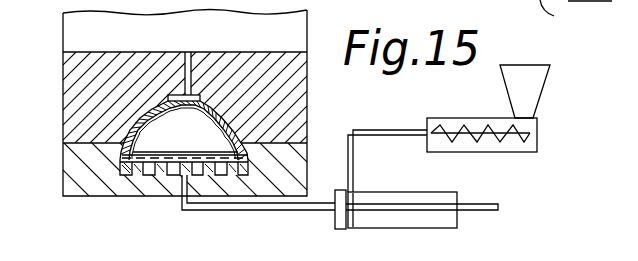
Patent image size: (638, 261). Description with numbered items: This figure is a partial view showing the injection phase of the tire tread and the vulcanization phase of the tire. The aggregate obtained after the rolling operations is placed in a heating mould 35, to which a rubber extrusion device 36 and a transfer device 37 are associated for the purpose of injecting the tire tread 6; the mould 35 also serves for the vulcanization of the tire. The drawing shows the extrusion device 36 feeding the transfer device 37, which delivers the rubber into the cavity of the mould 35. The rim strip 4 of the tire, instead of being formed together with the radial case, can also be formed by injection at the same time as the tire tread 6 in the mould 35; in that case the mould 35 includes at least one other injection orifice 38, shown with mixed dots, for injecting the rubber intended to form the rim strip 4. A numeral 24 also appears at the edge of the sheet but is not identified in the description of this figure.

The heating mould 35 is at (62, 106).
The injection orifice 38 is at (196, 73).
The rim strip 4 is at (173, 107).
The tire tread 6 is at (122, 162).
The component of adjacent figure 24 is at (576, 13).
The rubber extrusion device 36 is at (496, 117).
The transfer device 37 is at (418, 191).